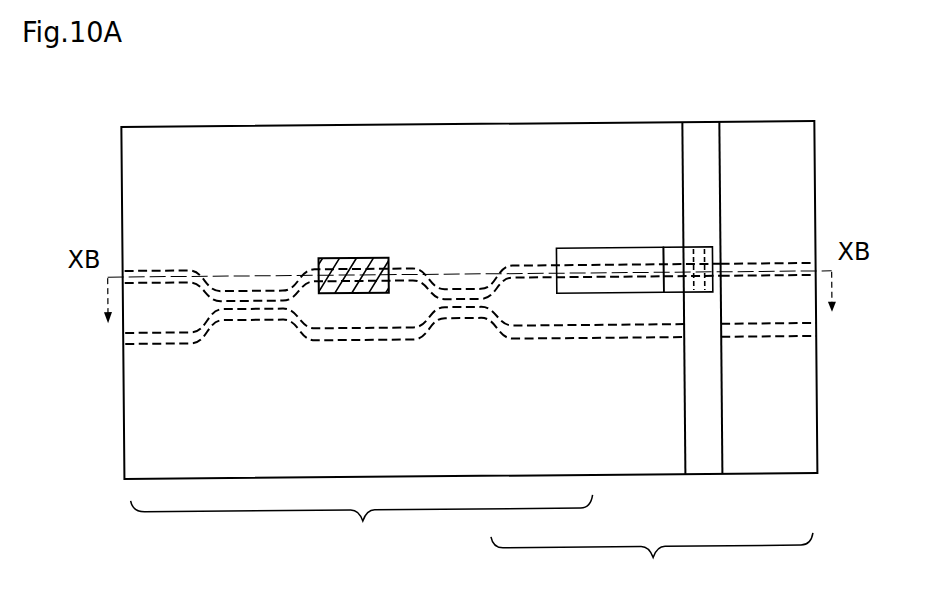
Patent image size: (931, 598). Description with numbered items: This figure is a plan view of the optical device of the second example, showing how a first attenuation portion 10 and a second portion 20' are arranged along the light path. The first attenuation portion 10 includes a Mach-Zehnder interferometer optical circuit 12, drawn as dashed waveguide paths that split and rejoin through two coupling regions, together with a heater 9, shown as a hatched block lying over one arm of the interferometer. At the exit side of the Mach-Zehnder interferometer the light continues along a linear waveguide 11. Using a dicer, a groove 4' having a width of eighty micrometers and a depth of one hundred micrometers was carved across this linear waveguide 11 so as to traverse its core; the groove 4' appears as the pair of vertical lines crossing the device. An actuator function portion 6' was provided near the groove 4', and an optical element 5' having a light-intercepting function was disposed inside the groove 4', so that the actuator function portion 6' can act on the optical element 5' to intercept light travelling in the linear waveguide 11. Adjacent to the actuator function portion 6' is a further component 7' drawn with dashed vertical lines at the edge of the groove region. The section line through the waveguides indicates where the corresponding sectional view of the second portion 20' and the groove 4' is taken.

The Mach-Zehnder interferometer optical circuit 12 is at (287, 283).
The heater 9 is at (366, 258).
The actuator function portion 6' is at (609, 183).
The electrode 7' is at (681, 183).
The linear waveguide 11 is at (773, 266).
The optical element 5' is at (773, 298).
The groove 4' is at (783, 298).
The first attenuation portion 10 is at (362, 524).
The fiber block 20' is at (652, 563).